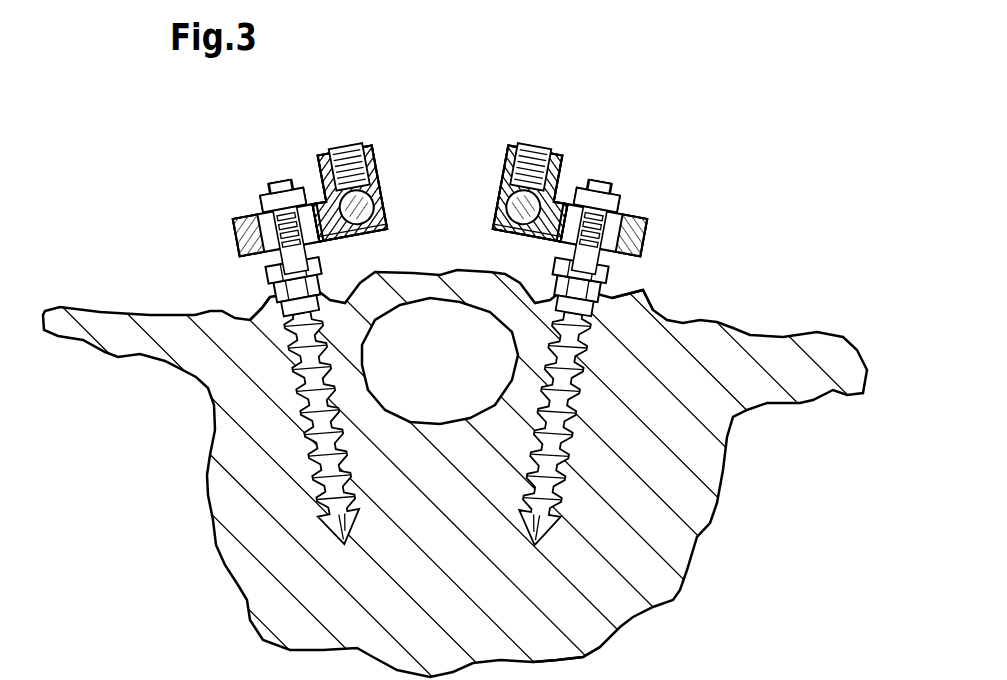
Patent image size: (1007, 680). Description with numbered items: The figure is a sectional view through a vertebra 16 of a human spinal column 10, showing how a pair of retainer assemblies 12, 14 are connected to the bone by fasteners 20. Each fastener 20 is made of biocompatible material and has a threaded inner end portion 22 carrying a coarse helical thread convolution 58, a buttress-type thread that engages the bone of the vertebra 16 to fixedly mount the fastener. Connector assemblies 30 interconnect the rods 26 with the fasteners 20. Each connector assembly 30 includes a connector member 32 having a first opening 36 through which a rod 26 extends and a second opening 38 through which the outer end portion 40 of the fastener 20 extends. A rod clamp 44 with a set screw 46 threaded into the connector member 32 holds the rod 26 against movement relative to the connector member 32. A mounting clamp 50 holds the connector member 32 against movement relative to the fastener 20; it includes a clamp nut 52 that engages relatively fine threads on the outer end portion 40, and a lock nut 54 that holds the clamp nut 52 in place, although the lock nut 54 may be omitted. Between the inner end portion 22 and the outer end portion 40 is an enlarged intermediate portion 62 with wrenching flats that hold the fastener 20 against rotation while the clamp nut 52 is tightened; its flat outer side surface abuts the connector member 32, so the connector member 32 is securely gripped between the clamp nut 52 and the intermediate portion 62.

The spinal column 10 is at (195, 600).
The retainer assembly 12 is at (145, 143).
The retainer assembly 14 is at (722, 185).
The vertebra 16 is at (623, 597).
The fastener 20 is at (270, 297).
The inner end portion 22 is at (310, 472).
The rod 26 is at (494, 225).
The connector assembly 30 is at (351, 112).
The connector member 32 is at (234, 222).
The first opening 36 is at (502, 190).
The second opening 38 is at (315, 233).
The outer end portion 40 is at (237, 240).
The rod clamp 44 is at (322, 148).
The set screw 46 is at (348, 150).
The mounting clamp 50 is at (248, 194).
The clamp nut 52 is at (303, 196).
The lock nut 54 is at (264, 186).
The coarse helical thread convolution 58 is at (304, 418).
The enlarged intermediate portion 62 is at (262, 271).